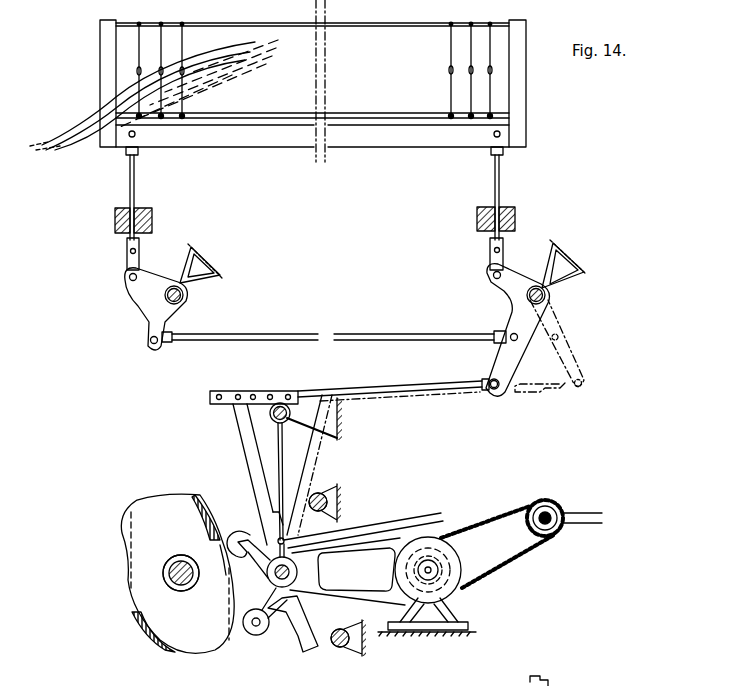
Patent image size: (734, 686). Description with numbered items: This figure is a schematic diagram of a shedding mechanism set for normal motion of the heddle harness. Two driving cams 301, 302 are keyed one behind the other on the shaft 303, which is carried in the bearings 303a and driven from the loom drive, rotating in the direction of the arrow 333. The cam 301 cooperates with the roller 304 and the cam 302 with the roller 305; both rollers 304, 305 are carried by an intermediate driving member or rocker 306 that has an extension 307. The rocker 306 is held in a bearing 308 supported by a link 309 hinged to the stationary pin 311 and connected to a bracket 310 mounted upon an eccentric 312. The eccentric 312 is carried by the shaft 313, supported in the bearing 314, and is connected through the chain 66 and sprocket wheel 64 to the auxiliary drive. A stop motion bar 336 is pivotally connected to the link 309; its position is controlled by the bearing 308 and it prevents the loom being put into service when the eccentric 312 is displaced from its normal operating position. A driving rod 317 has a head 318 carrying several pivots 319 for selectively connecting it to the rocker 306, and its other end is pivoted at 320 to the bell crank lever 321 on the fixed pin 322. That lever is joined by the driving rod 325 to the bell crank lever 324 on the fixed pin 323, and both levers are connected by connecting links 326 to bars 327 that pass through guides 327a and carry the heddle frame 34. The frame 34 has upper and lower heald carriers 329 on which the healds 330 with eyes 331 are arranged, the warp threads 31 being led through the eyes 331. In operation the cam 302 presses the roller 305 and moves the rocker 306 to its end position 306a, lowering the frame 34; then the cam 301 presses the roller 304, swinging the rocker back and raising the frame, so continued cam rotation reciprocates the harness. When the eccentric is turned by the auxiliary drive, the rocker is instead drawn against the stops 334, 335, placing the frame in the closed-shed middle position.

The warp threads 31 is at (205, 50).
The heddle frame 34 is at (334, 148).
The sprocket wheel 64 is at (588, 510).
The chain 66 is at (504, 516).
The driving cam 301 is at (190, 648).
The driving cam 302 is at (212, 494).
The shaft 303 is at (170, 570).
The bearings 303a is at (189, 592).
The roller 304 is at (252, 636).
The roller 305 is at (242, 537).
The rocker 306 is at (245, 444).
The end position of rocker 306a is at (309, 452).
The extension 307 is at (302, 650).
The bearing 308 is at (270, 577).
The link 309 is at (276, 457).
The bracket 310 is at (366, 560).
The stationary pin 311 is at (270, 417).
The eccentric 312 is at (410, 550).
The shaft 313 is at (446, 553).
The bearing 314 is at (436, 578).
The driving rod 317 is at (418, 392).
The head 318 is at (274, 391).
The pivots 319 is at (240, 394).
The pivot 320 is at (492, 389).
The bell crank lever 321 is at (512, 290).
The fixed pin 322 is at (546, 296).
The fixed pin 323 is at (183, 299).
The bell crank lever 324 is at (147, 297).
The driving rod 325 is at (322, 333).
The connecting links 326 is at (139, 263).
The bars 327 is at (135, 184).
The guides 327a is at (150, 214).
The heald carrier 329 is at (352, 110).
The healds 330 is at (470, 30).
The eyes 331 is at (470, 70).
The arrow 333 is at (184, 538).
The stop 334 is at (338, 648).
The stop 335 is at (340, 494).
The stop motion bar 336 is at (396, 522).